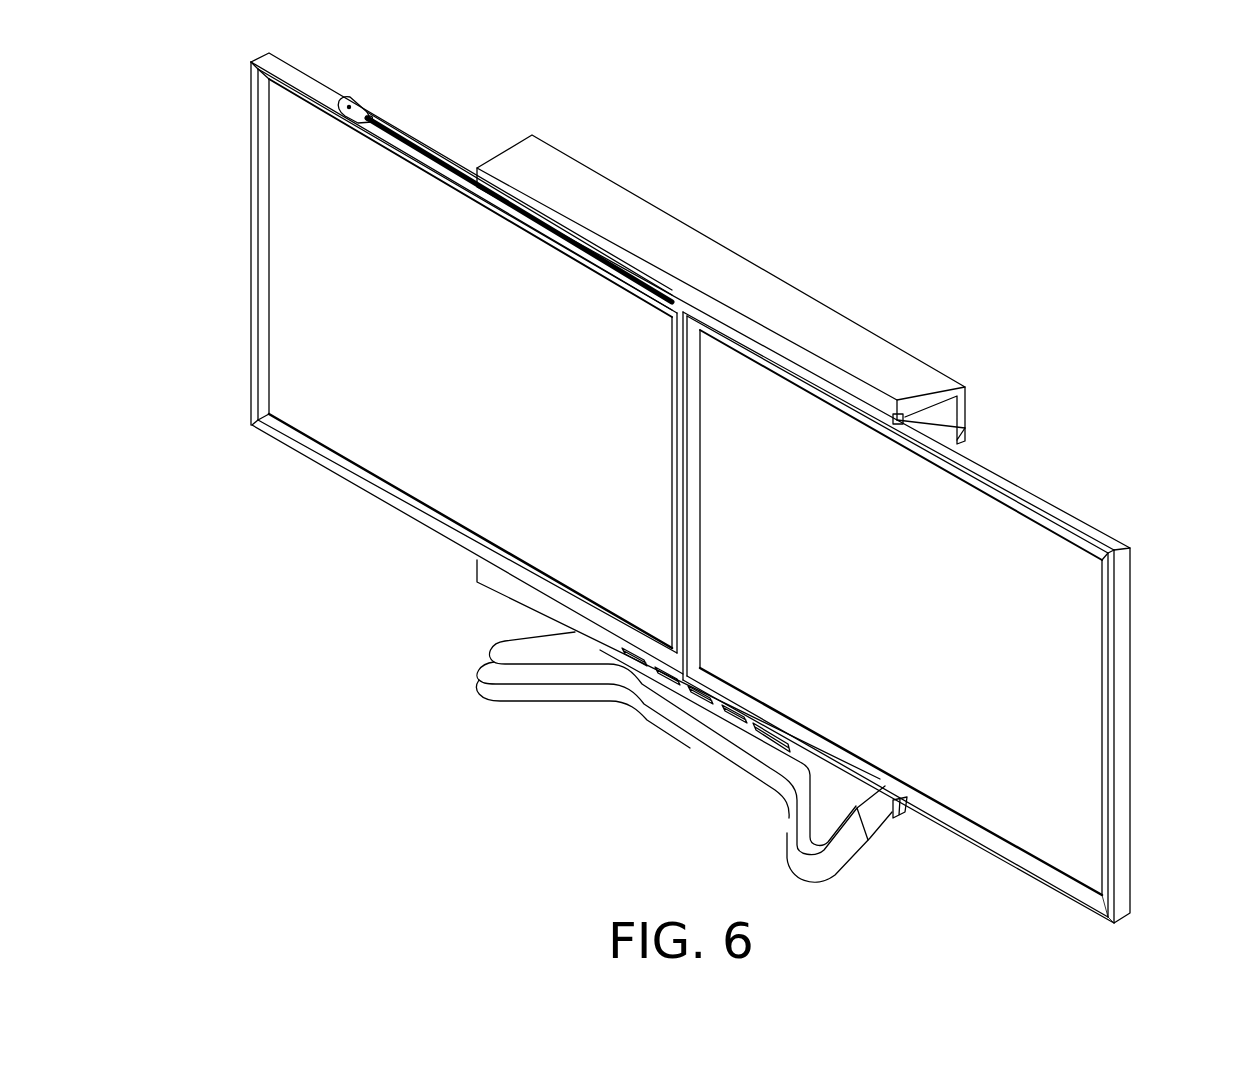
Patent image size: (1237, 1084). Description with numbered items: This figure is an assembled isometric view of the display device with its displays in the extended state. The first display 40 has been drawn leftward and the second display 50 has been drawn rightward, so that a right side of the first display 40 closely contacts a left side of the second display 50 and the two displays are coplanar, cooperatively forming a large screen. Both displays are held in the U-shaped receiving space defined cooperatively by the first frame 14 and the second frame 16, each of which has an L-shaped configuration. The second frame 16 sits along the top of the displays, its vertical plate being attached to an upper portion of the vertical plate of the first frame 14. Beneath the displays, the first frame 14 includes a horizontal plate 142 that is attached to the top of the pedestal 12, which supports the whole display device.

The first display 40 is at (340, 347).
The second display 50 is at (1065, 688).
The second frame 16 is at (766, 290).
The first frame 14 is at (957, 443).
The pedestal 12 is at (708, 767).
The horizontal plate 142 is at (883, 800).